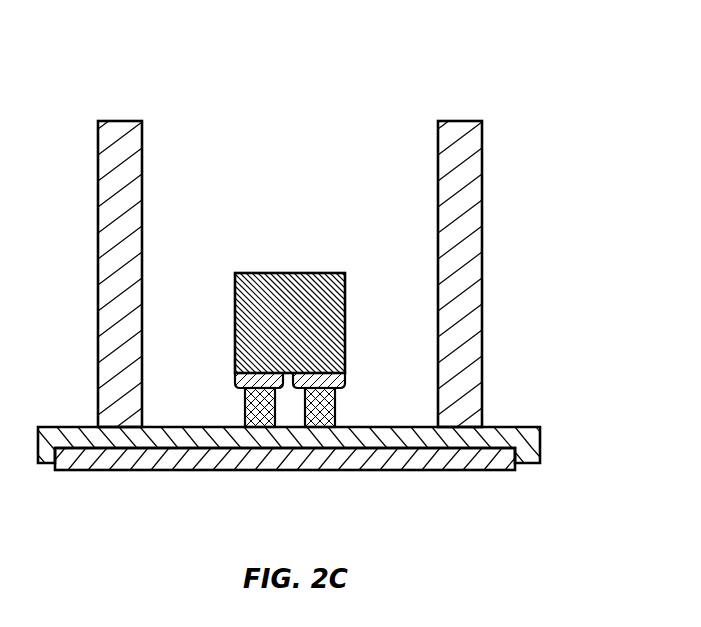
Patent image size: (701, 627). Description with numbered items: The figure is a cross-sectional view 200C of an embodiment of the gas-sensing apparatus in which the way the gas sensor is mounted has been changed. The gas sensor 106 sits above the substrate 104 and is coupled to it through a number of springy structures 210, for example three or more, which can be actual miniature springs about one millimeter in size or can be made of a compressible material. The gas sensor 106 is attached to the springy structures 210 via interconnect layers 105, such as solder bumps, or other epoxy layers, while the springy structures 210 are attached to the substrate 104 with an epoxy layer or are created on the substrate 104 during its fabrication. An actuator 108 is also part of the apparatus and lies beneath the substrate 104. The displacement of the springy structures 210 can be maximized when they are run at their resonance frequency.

The cross-sectional view 200C is at (51, 123).
The substrate 104 is at (542, 437).
The interconnect layers 105 is at (346, 384).
The gas sensor 106 is at (235, 327).
The actuator 108 is at (283, 471).
The springy structures 210 is at (245, 410).